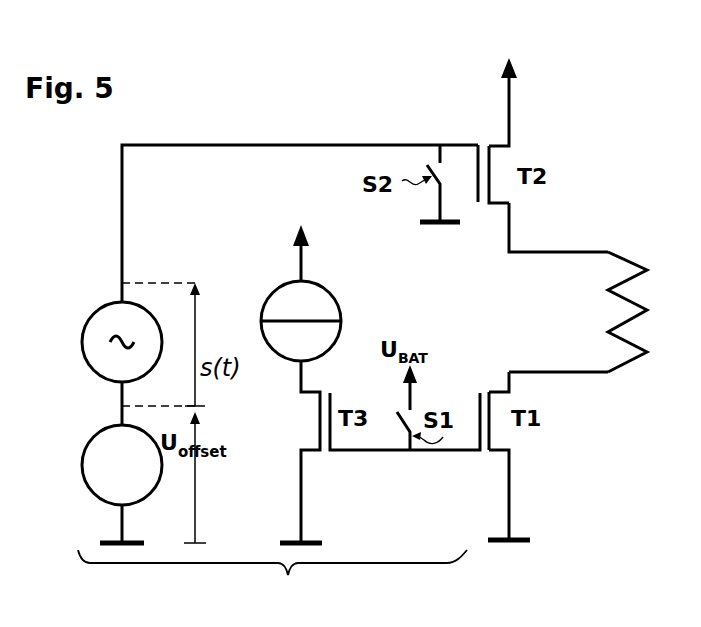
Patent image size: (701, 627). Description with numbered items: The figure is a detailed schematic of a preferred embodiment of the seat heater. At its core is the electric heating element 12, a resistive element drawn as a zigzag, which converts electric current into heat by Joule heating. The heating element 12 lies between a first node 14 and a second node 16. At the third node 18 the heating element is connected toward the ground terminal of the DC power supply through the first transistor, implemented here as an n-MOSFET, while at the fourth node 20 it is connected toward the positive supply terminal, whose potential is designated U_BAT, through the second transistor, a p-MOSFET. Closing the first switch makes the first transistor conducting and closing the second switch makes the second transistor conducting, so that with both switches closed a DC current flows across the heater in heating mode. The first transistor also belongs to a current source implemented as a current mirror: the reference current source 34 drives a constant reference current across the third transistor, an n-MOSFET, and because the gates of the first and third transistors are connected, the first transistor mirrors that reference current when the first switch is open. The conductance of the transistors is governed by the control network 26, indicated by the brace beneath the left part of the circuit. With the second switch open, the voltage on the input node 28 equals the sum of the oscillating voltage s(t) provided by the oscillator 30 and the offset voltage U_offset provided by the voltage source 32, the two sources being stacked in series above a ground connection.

The electric heating element 12 is at (608, 292).
The first node 14 is at (575, 374).
The second node 16 is at (520, 254).
The third node 18 is at (510, 490).
The fourth node 20 is at (510, 118).
The control network 26 is at (272, 586).
The input node 28 is at (168, 147).
The oscillator 30 is at (83, 336).
The voltage source 32 is at (89, 438).
The current source 34 is at (343, 315).